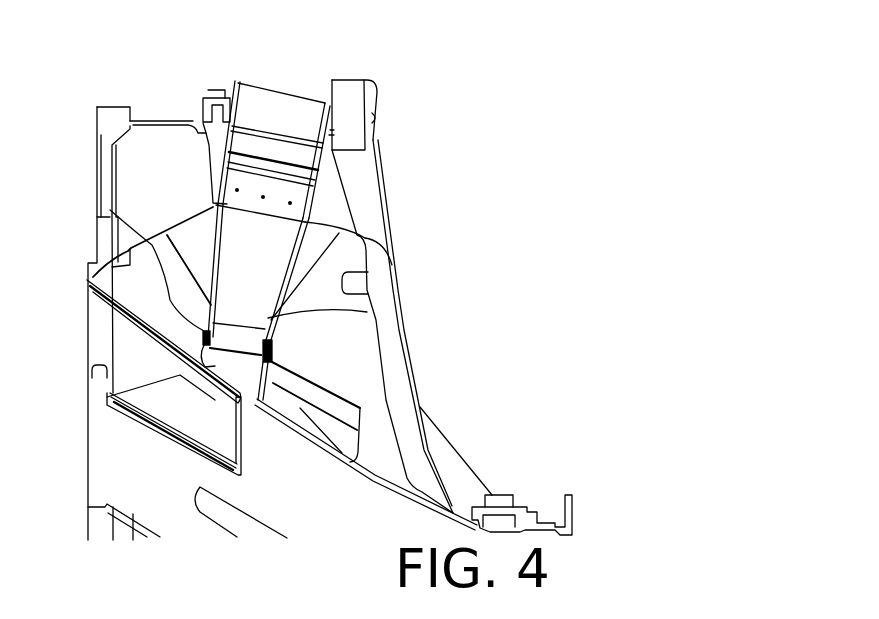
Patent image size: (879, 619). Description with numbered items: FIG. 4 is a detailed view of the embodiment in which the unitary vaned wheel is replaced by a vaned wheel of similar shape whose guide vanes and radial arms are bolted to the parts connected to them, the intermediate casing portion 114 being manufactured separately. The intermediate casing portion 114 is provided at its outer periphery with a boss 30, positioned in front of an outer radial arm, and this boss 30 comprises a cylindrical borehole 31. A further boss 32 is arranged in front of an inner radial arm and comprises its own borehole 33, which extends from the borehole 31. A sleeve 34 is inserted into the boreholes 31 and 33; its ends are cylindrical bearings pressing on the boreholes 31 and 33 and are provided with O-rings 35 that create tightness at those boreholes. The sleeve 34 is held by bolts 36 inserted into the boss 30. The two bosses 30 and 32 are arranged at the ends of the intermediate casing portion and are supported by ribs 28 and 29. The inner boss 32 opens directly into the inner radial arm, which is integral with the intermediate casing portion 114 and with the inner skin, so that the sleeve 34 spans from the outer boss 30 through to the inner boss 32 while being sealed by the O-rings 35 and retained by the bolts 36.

The rib 28 is at (350, 202).
The rib 29 is at (141, 294).
The boss 30 is at (189, 111).
The cylindrical borehole 31 is at (236, 117).
The further boss 32 is at (203, 335).
The borehole 33 is at (140, 374).
The sleeve 34 is at (305, 264).
The O-rings 35 is at (303, 215).
The bolts 36 is at (216, 86).
The intermediate casing portion 114 is at (458, 414).